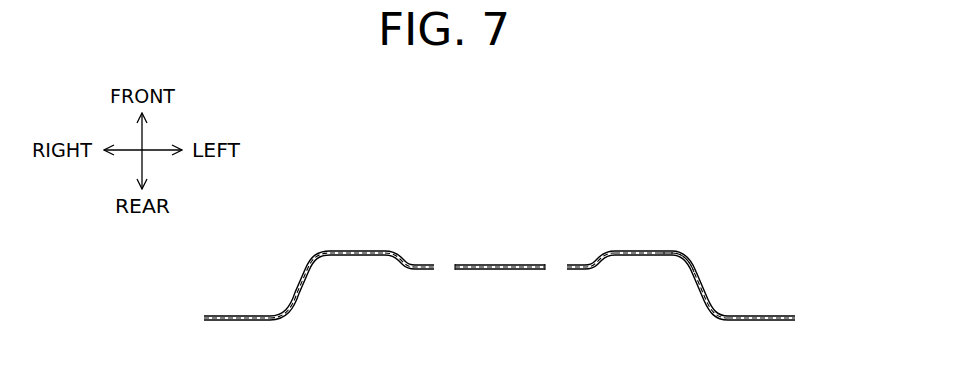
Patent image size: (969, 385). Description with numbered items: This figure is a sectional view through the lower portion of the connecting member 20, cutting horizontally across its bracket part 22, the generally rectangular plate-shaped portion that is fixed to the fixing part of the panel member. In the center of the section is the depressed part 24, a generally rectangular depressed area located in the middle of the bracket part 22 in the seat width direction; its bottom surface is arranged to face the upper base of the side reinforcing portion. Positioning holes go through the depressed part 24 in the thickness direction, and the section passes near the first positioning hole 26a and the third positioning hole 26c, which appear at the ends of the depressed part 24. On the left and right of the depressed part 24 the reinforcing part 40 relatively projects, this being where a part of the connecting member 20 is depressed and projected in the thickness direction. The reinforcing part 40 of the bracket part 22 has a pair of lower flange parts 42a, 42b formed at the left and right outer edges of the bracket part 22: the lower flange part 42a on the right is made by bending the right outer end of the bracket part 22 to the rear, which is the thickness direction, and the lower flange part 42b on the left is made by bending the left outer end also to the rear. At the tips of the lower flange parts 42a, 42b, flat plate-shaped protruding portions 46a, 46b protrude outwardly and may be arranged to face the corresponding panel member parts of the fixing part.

The connecting member 20 is at (481, 186).
The bracket part 22 is at (687, 250).
The depressed part 24 is at (501, 265).
The first positioning hole 26a is at (455, 270).
The third positioning hole 26c is at (545, 270).
The reinforcing part 40 is at (354, 252).
The lower flange part 42a is at (300, 282).
The lower flange part 42b is at (700, 280).
The protruding portion 46a is at (240, 315).
The protruding portion 46b is at (760, 315).